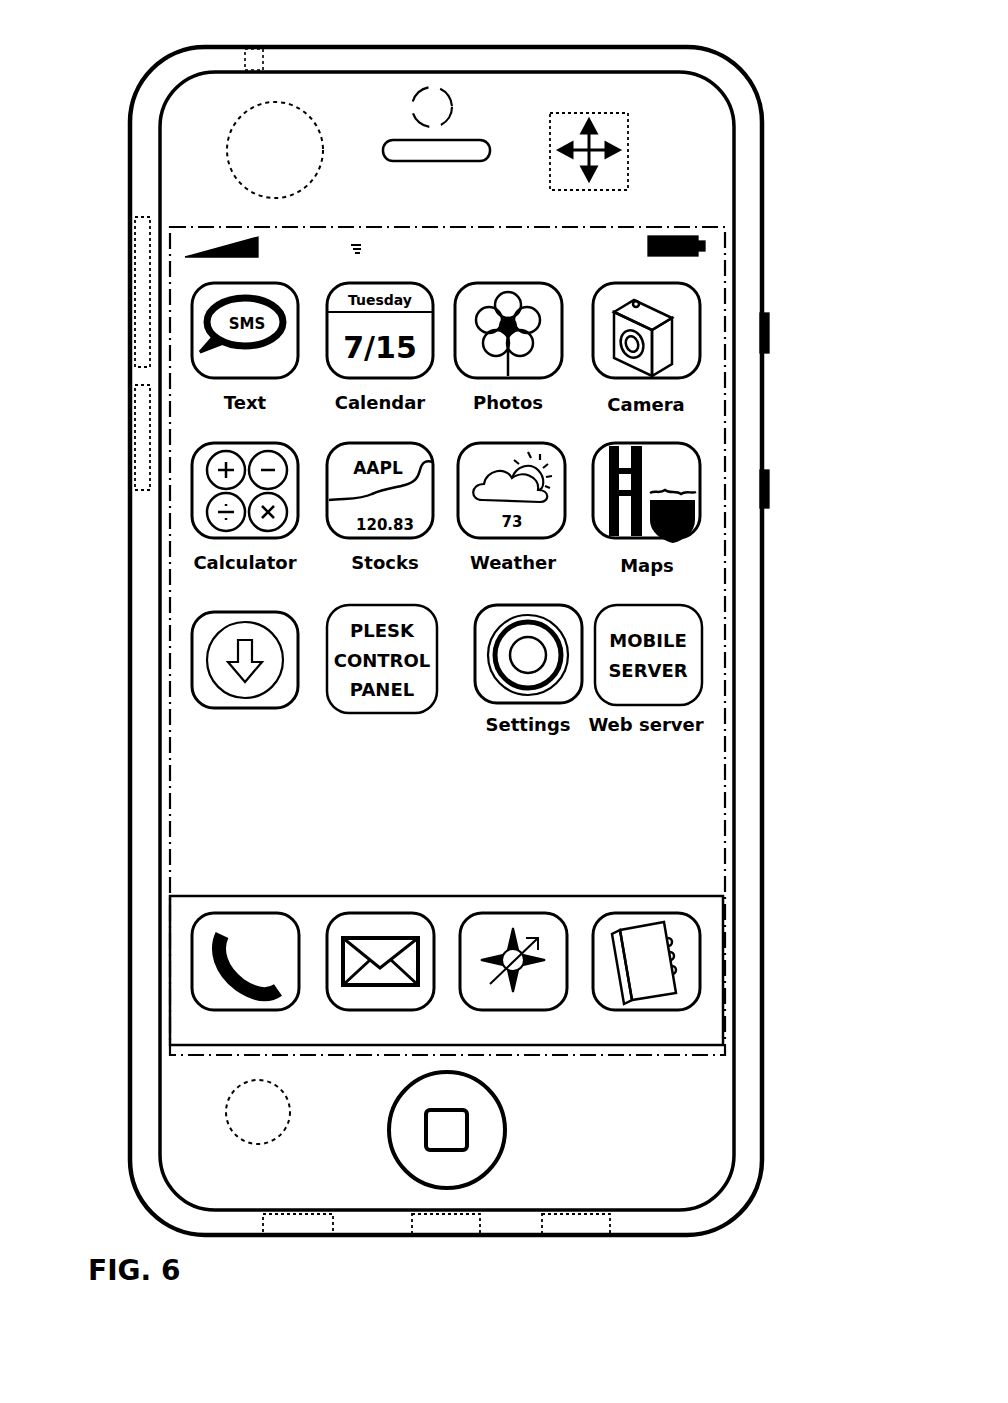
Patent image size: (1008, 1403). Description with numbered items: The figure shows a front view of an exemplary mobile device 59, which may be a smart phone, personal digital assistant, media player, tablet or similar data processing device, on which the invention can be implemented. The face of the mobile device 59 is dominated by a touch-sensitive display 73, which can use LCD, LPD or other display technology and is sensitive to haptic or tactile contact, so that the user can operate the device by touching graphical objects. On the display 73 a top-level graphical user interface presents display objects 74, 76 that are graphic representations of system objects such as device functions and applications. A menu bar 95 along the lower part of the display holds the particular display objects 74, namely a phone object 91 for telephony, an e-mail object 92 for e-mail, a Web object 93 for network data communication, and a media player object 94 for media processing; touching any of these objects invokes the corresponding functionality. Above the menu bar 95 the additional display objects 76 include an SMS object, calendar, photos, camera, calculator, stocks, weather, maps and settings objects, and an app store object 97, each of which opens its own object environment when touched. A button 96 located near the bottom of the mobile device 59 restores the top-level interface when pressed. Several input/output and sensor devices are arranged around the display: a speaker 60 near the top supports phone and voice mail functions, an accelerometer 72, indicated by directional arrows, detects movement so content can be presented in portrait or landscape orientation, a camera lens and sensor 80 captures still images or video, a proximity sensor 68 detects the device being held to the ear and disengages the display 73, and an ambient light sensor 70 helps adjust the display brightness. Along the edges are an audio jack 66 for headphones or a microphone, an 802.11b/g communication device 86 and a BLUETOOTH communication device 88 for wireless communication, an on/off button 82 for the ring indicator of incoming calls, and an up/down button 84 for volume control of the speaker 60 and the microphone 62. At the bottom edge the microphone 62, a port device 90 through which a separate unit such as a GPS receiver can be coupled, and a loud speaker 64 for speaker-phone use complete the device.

The mobile device 59 is at (535, 47).
The audio jack 66 is at (258, 47).
The proximity sensor 68 is at (240, 170).
The camera lens and sensor 80 is at (454, 108).
The speaker 60 is at (444, 162).
The accelerometer 72 is at (630, 163).
The touch-sensitive display 73 is at (658, 227).
The 802.11b/g communication device 86 is at (140, 270).
The BLUETOOTH communication device 88 is at (140, 440).
The on/off button 82 is at (770, 333).
The up/down button 84 is at (770, 488).
The app store object 97 is at (248, 612).
The display objects 76 is at (662, 766).
The display objects 74 is at (712, 910).
The phone object 91 is at (248, 912).
The e-mail object 92 is at (385, 912).
The Web object 93 is at (515, 912).
The media player object 94 is at (645, 912).
The button 96 is at (507, 1130).
The menu bar 95 is at (598, 1055).
The ambient light sensor 70 is at (270, 1140).
The microphone 62 is at (305, 1237).
The port device 90 is at (450, 1237).
The loud speaker 64 is at (575, 1237).